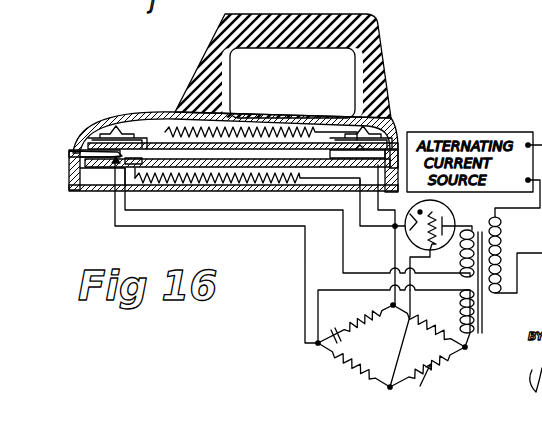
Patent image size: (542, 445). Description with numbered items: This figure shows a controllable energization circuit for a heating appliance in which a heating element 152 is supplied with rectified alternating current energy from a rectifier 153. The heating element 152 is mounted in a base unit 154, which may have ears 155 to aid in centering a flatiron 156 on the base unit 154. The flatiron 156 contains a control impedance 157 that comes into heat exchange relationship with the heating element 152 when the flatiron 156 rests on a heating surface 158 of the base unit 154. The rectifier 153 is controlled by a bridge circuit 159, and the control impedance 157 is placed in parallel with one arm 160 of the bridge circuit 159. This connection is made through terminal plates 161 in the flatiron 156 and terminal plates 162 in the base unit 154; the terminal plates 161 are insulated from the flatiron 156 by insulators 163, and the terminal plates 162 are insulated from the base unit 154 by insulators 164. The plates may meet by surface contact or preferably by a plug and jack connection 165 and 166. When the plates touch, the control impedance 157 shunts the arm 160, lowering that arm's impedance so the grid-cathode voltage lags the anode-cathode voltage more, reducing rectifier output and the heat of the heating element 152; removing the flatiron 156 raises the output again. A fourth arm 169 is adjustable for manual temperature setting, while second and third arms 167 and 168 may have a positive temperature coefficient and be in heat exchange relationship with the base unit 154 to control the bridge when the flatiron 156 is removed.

The heating element 152 is at (263, 160).
The rectifier 153 is at (453, 217).
The base unit 154 is at (97, 180).
The ears 155 is at (70, 153).
The flatiron 156 is at (110, 133).
The control impedance 157 is at (265, 128).
The heating surface 158 is at (265, 160).
The bridge circuit 159 is at (393, 354).
The arm of the bridge circuit 160 is at (340, 324).
The terminal plates in the flatiron 161 is at (100, 140).
The terminal plates in the base unit 162 is at (113, 165).
The insulators 163 is at (167, 66).
The insulators 164 is at (343, 140).
The plug of plug and jack connection 165 is at (80, 147).
The jack of plug and jack connection 166 is at (106, 132).
The second arm of the bridge 167 is at (429, 323).
The third arm of the bridge 168 is at (351, 366).
The fourth arm of the bridge 169 is at (443, 362).